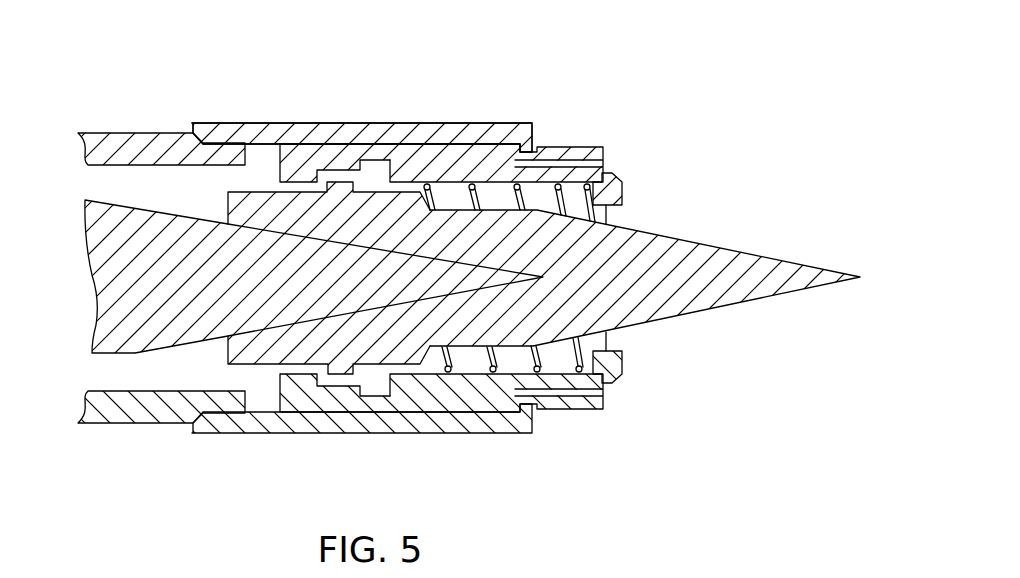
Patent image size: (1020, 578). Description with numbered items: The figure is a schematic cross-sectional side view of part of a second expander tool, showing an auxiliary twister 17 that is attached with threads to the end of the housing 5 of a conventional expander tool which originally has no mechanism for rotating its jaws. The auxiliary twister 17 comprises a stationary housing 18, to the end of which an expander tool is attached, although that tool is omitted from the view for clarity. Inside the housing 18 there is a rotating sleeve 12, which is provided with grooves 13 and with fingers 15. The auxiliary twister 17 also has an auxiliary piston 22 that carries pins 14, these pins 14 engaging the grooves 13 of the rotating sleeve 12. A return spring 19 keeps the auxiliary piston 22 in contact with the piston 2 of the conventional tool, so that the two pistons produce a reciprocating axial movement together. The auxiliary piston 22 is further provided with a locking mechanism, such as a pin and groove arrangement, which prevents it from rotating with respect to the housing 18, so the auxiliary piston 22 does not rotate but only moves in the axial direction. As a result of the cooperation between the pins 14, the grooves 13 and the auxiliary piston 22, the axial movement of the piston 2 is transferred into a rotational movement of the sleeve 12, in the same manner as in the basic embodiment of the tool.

The piston 2 is at (163, 300).
The housing 5 is at (125, 152).
The rotating sleeve 12 is at (485, 396).
The grooves 13 is at (363, 177).
The pins 14 is at (342, 373).
The fingers 15 is at (615, 197).
The auxiliary twister 17 is at (448, 88).
The stationary housing 18 is at (222, 136).
The return spring 19 is at (448, 374).
The auxiliary piston 22 is at (652, 290).